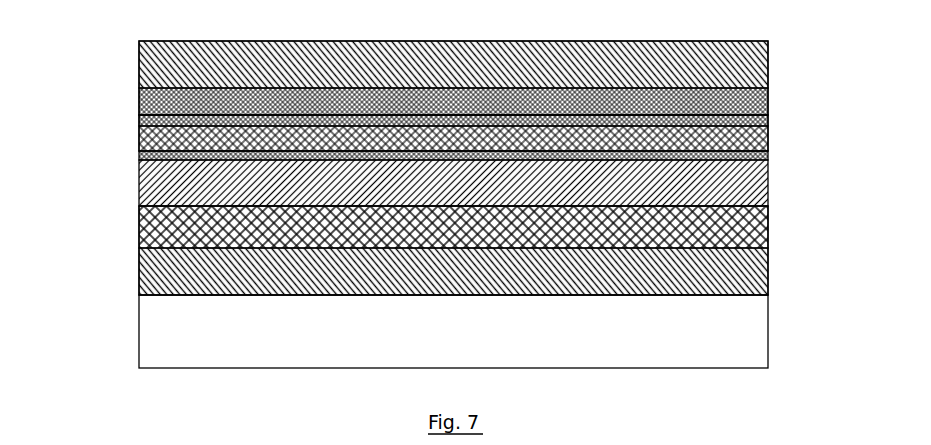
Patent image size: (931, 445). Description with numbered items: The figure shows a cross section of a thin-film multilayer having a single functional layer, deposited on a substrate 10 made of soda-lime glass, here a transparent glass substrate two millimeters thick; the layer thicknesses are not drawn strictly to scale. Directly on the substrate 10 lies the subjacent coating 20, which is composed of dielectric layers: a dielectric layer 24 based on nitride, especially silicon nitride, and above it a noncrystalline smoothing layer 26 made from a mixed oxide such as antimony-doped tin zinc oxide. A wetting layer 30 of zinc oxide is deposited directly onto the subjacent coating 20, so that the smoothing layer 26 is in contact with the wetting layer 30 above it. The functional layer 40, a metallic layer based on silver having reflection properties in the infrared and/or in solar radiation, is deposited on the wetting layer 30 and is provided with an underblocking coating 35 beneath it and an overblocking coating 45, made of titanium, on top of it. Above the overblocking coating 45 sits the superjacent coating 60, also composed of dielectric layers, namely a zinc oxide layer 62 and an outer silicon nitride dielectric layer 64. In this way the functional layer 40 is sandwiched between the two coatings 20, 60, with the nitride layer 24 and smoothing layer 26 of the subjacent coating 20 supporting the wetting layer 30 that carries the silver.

The substrate 10 is at (458, 323).
The subjacent coating 20 is at (773, 203).
The dielectric layer 24 is at (130, 276).
The smoothing layer 26 is at (130, 233).
The wetting layer 30 is at (130, 186).
The underblocking coating 35 is at (130, 154).
The functional layer 40 is at (760, 127).
The overblocking coating 45 is at (130, 123).
The superjacent coating 60 is at (773, 40).
The zinc oxide layer 62 is at (130, 93).
The dielectric layer 64 is at (130, 58).